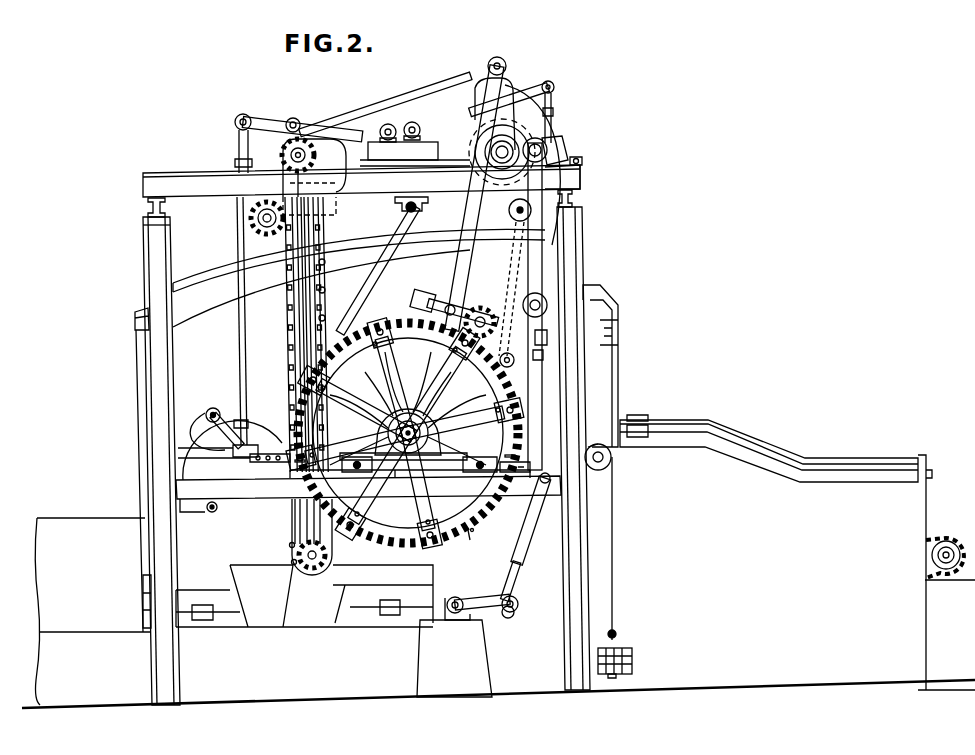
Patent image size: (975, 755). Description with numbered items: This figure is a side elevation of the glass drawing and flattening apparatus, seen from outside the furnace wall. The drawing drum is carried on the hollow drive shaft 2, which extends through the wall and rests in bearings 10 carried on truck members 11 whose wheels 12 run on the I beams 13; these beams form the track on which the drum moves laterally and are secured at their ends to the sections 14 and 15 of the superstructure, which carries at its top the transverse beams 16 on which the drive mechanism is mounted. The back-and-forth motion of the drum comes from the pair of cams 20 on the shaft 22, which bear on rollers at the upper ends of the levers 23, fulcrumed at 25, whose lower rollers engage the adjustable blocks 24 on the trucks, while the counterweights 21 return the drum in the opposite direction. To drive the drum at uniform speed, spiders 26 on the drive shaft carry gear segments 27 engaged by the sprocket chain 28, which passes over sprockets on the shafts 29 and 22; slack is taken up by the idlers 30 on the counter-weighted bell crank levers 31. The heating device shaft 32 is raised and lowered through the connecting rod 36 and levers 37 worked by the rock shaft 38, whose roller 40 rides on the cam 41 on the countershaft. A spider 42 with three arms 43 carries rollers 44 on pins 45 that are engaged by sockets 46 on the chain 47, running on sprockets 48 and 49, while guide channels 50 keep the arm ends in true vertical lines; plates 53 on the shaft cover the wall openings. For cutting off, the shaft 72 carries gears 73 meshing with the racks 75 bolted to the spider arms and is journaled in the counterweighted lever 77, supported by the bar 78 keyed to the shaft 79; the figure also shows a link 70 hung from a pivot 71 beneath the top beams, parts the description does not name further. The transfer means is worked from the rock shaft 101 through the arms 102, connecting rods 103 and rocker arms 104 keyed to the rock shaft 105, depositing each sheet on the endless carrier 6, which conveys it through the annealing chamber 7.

The hollow drive shaft 2 is at (418, 422).
The endless carrier 6 is at (944, 543).
The chamber 7 is at (757, 480).
The bearings 10 is at (395, 480).
The truck members 11 is at (469, 540).
The wheels 12 is at (405, 443).
The I beams 13 is at (252, 499).
The section 14 is at (150, 404).
The section 15 is at (595, 397).
The transverse beams 16 is at (196, 180).
The cams 20 is at (492, 180).
The counterweights 21 is at (634, 660).
The shaft 22 is at (548, 145).
The levers 23 is at (545, 256).
The blocks 24 is at (474, 533).
The fulcrum 25 is at (547, 305).
The spiders 26 is at (382, 380).
The gear segment 27 is at (408, 408).
The sprocket chain 28 is at (284, 325).
The shaft 29 is at (291, 155).
The idlers 30 is at (531, 210).
The counter-weighted bell crank levers 31 is at (583, 162).
The shaft 32 is at (250, 459).
The connecting rod 36 is at (234, 353).
The levers 37 is at (272, 110).
The rock shaft 38 is at (388, 124).
The roller 40 is at (296, 119).
The cam 41 is at (333, 193).
The spider 42 is at (233, 447).
The arms 43 is at (201, 420).
The rollers 44 is at (214, 408).
The pins 45 is at (208, 512).
The sockets 46 is at (326, 262).
The chain 47 is at (325, 289).
The sprocket 48 is at (312, 572).
The sprocket 49 is at (290, 161).
The guide channels 50 is at (292, 525).
The plates 53 is at (259, 410).
The link arm 70 is at (422, 229).
The pivot bolt 71 is at (404, 208).
The shaft 72 is at (481, 312).
The gears 73 is at (506, 350).
The racks 75 is at (394, 320).
The counterweighted lever 77 is at (421, 297).
The bar 78 is at (458, 262).
The shaft 79 is at (506, 68).
The rock shaft 101 is at (465, 592).
The arms 102 is at (494, 607).
The connecting rods 103 is at (520, 540).
The rocker arms 104 is at (446, 117).
The rock shaft 105 is at (411, 122).